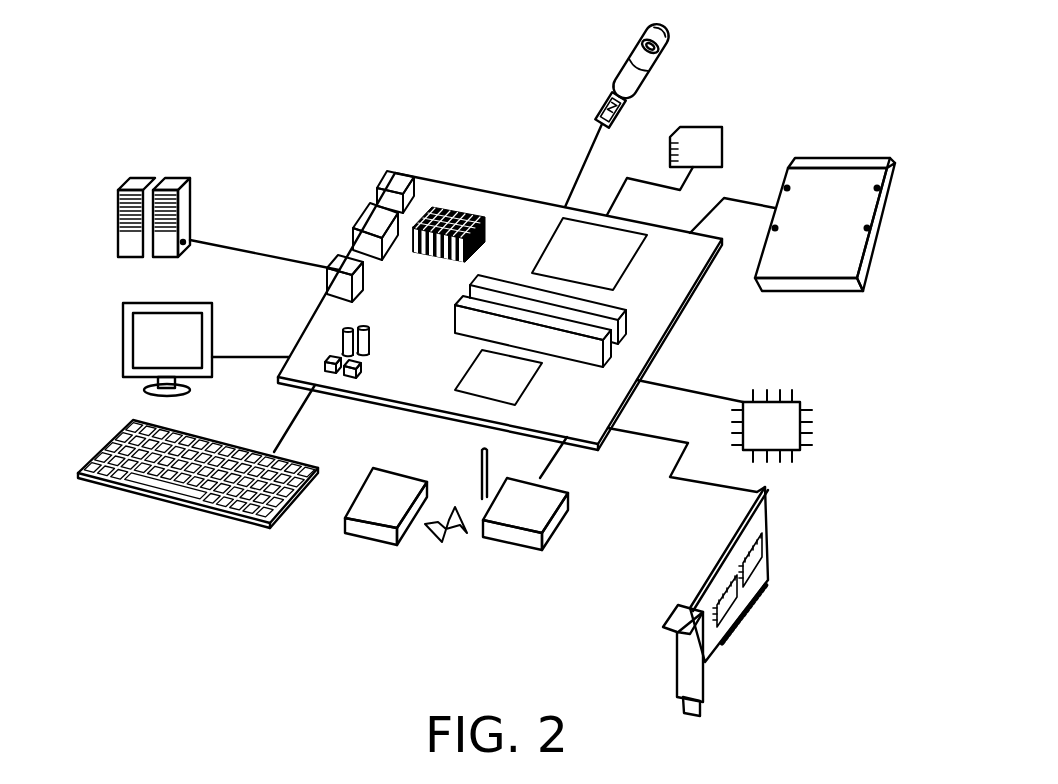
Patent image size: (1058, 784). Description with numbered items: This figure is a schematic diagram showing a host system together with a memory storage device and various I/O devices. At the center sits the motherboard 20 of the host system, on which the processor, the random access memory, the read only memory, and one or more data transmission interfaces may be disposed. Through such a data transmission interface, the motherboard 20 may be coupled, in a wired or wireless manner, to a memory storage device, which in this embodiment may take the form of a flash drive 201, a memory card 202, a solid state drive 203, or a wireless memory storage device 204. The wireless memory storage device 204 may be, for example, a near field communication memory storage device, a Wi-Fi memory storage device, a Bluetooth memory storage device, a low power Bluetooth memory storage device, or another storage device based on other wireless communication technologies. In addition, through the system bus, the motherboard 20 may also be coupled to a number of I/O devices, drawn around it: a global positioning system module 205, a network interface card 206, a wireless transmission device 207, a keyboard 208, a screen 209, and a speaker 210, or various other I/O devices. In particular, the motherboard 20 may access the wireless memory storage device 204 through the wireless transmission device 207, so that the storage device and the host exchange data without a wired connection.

The motherboard 20 is at (502, 214).
The flash drive 201 is at (627, 65).
The memory card 202 is at (724, 138).
The solid state drive 203 is at (843, 158).
The wireless memory storage device 204 is at (358, 482).
The global positioning system module 205 is at (812, 420).
The network interface card 206 is at (771, 547).
The wireless transmission device 207 is at (560, 532).
The keyboard 208 is at (203, 513).
The screen 209 is at (122, 358).
The speaker 210 is at (118, 242).